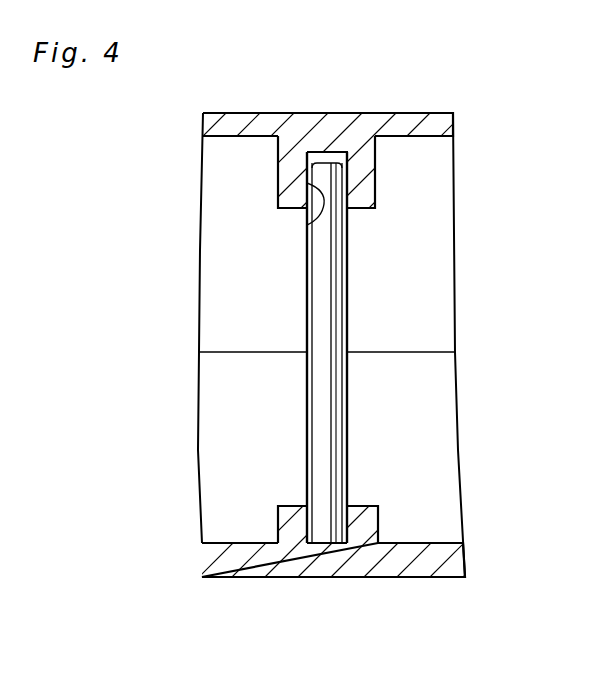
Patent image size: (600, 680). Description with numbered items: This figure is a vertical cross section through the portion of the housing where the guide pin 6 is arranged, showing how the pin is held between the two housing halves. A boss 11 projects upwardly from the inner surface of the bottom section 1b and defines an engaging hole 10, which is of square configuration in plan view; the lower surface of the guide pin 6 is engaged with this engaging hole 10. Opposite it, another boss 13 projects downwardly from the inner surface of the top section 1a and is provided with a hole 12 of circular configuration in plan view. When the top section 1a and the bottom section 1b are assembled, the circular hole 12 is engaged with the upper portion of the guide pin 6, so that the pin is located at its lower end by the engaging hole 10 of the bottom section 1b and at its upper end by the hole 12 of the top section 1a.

The top section 1a is at (227, 113).
The bottom section 1b is at (218, 574).
The guide pin 6 is at (337, 403).
The engaging hole 10 is at (318, 518).
The boss 11 is at (370, 520).
The hole 12 is at (309, 224).
The boss 13 is at (283, 192).